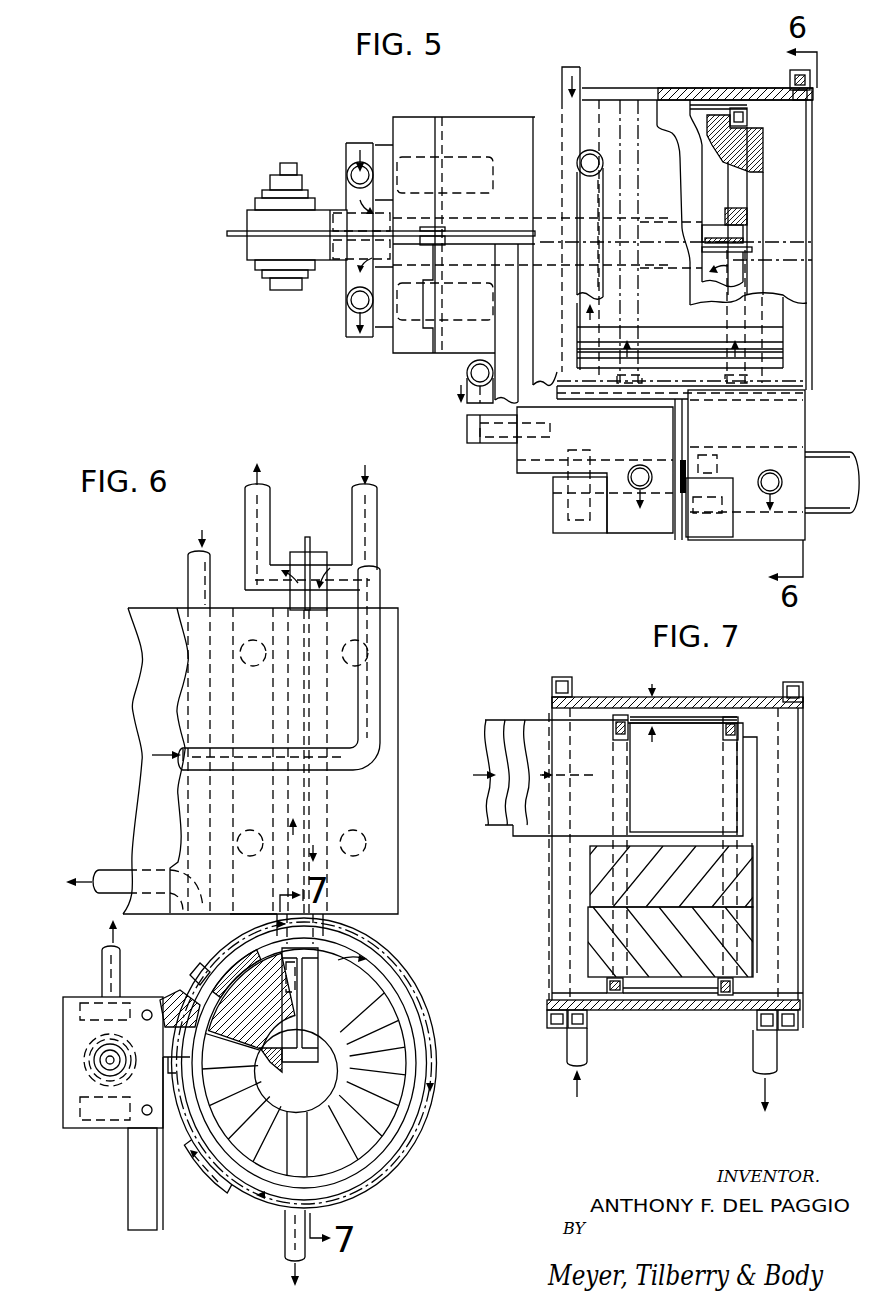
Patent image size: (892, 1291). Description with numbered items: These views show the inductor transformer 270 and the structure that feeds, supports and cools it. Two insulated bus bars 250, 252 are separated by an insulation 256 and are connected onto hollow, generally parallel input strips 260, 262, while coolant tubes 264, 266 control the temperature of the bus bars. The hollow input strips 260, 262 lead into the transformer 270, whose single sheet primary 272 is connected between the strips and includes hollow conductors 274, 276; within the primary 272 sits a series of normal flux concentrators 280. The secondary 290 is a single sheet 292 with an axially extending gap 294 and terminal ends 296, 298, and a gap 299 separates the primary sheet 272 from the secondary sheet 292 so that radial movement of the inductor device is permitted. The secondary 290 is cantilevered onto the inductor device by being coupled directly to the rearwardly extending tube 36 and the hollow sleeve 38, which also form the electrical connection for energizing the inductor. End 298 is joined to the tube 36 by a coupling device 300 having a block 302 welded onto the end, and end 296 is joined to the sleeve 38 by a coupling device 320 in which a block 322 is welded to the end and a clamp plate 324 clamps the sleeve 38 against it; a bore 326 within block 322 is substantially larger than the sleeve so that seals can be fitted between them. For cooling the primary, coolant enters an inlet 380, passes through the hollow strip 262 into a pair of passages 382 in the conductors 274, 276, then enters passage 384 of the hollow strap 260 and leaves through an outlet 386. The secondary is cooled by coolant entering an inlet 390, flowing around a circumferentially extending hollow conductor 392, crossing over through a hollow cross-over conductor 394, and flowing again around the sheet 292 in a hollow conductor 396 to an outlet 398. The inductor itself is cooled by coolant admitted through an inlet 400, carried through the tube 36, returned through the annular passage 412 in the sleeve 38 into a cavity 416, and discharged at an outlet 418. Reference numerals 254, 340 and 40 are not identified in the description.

In FIG. 5, the insulated bus bar 250 is at (475, 114).
In FIG. 6, the insulated bus bar 250 is at (143, 618).
In FIG. 5, the insulated bus bar 252 is at (537, 135).
In FIG. 6, the insulated bus bar 252 is at (187, 642).
In FIG. 5, the support plate 254 is at (506, 326).
In FIG. 5, the insulation 256 is at (460, 233).
In FIG. 6, the insulation 256 is at (316, 530).
In FIG. 7, the insulation 256 is at (520, 723).
In FIG. 5, the hollow input strip 260 is at (755, 249).
In FIG. 6, the hollow input strip 260 is at (330, 992).
In FIG. 7, the hollow input strip 260 is at (550, 813).
In FIG. 5, the hollow input strip 262 is at (712, 222).
In FIG. 6, the hollow input strip 262 is at (316, 1006).
In FIG. 7, the hollow input strip 262 is at (502, 818).
In FIG. 5, the coolant tube 264 is at (467, 380).
In FIG. 6, the coolant tube 264 is at (211, 570).
In FIG. 5, the coolant tube 266 is at (603, 190).
In FIG. 6, the coolant tube 266 is at (381, 579).
In FIG. 5, the transformer 270 is at (712, 86).
In FIG. 6, the transformer 270 is at (444, 1038).
In FIG. 7, the transformer 270 is at (764, 690).
In FIG. 5, the single sheet primary 272 is at (686, 100).
In FIG. 6, the single sheet primary 272 is at (226, 946).
In FIG. 7, the single sheet primary 272 is at (683, 708).
In FIG. 7, the hollow conductor 274 is at (620, 715).
In FIG. 5, the hollow conductor 276 is at (740, 108).
In FIG. 6, the hollow conductor 276 is at (217, 1000).
In FIG. 7, the hollow conductor 276 is at (740, 728).
In FIG. 5, the flux concentrator 280 is at (765, 150).
In FIG. 6, the flux concentrator 280 is at (378, 1050).
In FIG. 7, the flux concentrator 280 is at (746, 887).
In FIG. 5, the secondary 290 is at (597, 76).
In FIG. 7, the secondary 290 is at (672, 1015).
In FIG. 5, the secondary sheet 292 is at (632, 88).
In FIG. 6, the secondary sheet 292 is at (226, 1163).
In FIG. 7, the secondary sheet 292 is at (712, 1011).
In FIG. 6, the axially extending gap 294 is at (296, 1071).
In FIG. 5, the terminal end 296 is at (592, 395).
In FIG. 6, the terminal end 296 is at (187, 1010).
In FIG. 6, the terminal end 298 is at (173, 1075).
In FIG. 6, the gap 299 is at (330, 936).
In FIG. 7, the gap 299 is at (680, 697).
In FIG. 5, the coupling device 300 is at (620, 523).
In FIG. 5, the block 302 is at (658, 404).
In FIG. 6, the block 302 is at (160, 1182).
In FIG. 5, the coupling device 320 is at (800, 415).
In FIG. 6, the coupling device 320 is at (63, 1012).
In FIG. 5, the block 322 is at (800, 443).
In FIG. 6, the block 322 is at (140, 1002).
In FIG. 5, the clamp plate 324 is at (716, 537).
In FIG. 6, the bore 326 is at (110, 1085).
In FIG. 5, the conduit 340 is at (492, 442).
In FIG. 6, the conduit 340 is at (138, 1165).
In FIG. 5, the rearwardly extending tube 36 is at (679, 495).
In FIG. 6, the rearwardly extending tube 36 is at (100, 1060).
In FIG. 5, the hollow sleeve 38 is at (836, 452).
In FIG. 6, the hollow sleeve 38 is at (96, 1072).
In FIG. 6, the connection 40 is at (104, 1078).
In FIG. 5, the inlet 380 is at (350, 165).
In FIG. 6, the inlet 380 is at (368, 507).
In FIG. 6, the passage 382 is at (255, 917).
In FIG. 6, the passage 384 is at (345, 960).
In FIG. 5, the outlet 386 is at (350, 308).
In FIG. 6, the outlet 386 is at (268, 505).
In FIG. 7, the inlet 390 is at (582, 1050).
In FIG. 5, the circumferentially extending hollow conductor 392 is at (562, 70).
In FIG. 7, the circumferentially extending hollow conductor 392 is at (556, 677).
In FIG. 5, the hollow cross-over conductor 394 is at (770, 375).
In FIG. 6, the hollow cross-over conductor 394 is at (197, 970).
In FIG. 5, the hollow conductor 396 is at (811, 80).
In FIG. 6, the hollow conductor 396 is at (438, 1058).
In FIG. 7, the hollow conductor 396 is at (804, 690).
In FIG. 6, the outlet 398 is at (285, 1245).
In FIG. 7, the outlet 398 is at (774, 1060).
In FIG. 5, the inlet 400 is at (640, 465).
In FIG. 6, the annular passage 412 is at (90, 1066).
In FIG. 6, the cavity 416 is at (86, 1046).
In FIG. 5, the outlet 418 is at (778, 475).
In FIG. 6, the outlet 418 is at (104, 958).